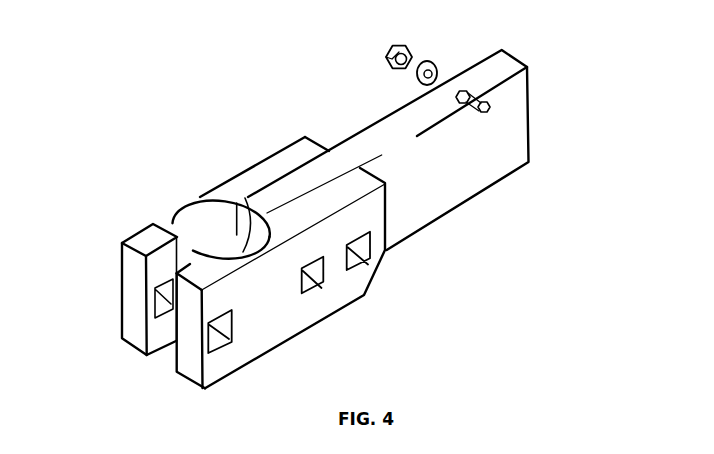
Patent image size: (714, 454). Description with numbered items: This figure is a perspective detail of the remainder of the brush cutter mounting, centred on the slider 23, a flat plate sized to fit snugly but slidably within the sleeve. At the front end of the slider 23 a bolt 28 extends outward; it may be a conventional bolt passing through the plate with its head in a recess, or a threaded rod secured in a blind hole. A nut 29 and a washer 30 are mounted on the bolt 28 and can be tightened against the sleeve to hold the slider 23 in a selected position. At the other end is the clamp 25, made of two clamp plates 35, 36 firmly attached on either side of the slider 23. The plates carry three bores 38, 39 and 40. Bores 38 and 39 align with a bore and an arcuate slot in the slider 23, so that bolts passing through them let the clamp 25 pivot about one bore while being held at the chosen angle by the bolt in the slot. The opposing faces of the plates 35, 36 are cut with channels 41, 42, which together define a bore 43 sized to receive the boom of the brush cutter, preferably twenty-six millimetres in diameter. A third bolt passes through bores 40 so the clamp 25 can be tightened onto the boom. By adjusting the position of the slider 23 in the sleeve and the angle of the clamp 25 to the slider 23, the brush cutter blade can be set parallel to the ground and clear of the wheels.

The slider 23 is at (518, 140).
The clamp 25 is at (299, 127).
The bolt 28 is at (477, 88).
The nut 29 is at (412, 42).
The washer 30 is at (436, 55).
The clamp plate 35 is at (127, 330).
The clamp plate 36 is at (177, 371).
The bore 38 is at (354, 250).
The bore 39 is at (312, 282).
The bore 40 is at (218, 348).
The channel 41 is at (198, 212).
The channel 42 is at (250, 252).
The bore 43 is at (216, 240).